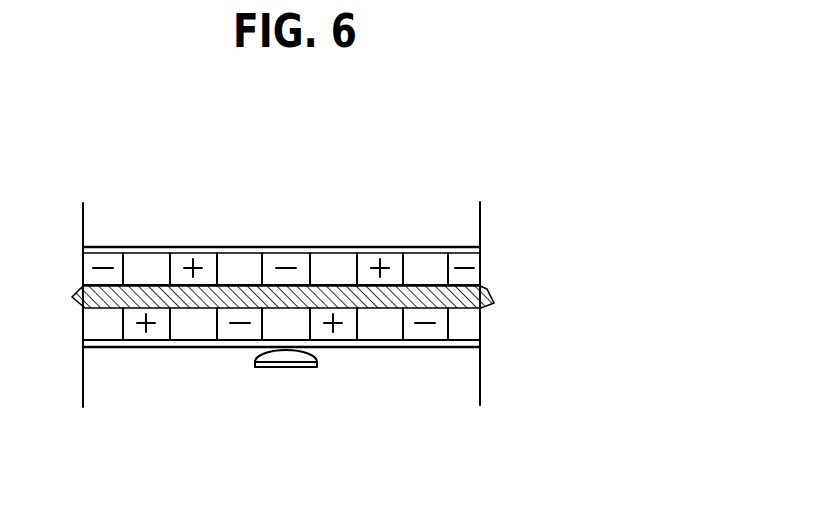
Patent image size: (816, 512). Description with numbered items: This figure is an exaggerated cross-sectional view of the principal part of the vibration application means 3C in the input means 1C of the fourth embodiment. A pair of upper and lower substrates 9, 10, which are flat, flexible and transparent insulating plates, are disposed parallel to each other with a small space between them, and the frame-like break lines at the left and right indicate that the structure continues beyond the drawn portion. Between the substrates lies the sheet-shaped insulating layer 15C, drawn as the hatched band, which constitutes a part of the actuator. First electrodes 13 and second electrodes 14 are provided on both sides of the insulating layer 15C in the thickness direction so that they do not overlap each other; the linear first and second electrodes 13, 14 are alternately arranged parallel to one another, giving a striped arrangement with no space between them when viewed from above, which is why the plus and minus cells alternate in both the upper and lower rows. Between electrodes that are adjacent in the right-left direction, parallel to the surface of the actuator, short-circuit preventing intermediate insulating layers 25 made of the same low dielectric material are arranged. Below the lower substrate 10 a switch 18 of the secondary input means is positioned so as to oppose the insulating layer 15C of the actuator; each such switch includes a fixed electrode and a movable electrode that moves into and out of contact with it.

The input means 1C is at (363, 279).
The vibration application means 3C is at (380, 246).
The upper substrate 9 is at (467, 247).
The lower substrate 10 is at (463, 347).
The first electrodes 13 is at (181, 253).
The second electrodes 14 is at (273, 262).
The insulating layer 15C is at (494, 302).
The switch 18 is at (286, 371).
The intermediate insulating layers 25 is at (417, 278).